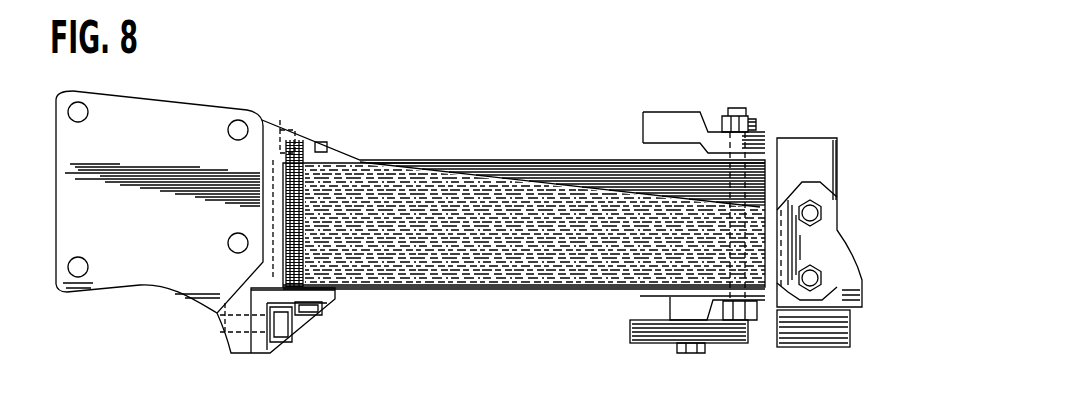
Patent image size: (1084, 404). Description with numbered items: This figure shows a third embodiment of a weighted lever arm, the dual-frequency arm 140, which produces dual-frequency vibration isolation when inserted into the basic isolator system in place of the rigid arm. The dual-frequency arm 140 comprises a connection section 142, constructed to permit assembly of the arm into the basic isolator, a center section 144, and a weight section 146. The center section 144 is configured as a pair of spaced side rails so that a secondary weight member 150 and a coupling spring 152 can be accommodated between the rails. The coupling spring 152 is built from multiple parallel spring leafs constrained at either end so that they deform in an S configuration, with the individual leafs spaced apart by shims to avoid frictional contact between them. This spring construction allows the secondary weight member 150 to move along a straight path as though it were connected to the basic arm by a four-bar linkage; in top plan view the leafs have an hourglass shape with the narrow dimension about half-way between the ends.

The dual-frequency arm 140 is at (491, 118).
The connection section 142 is at (168, 270).
The center section 144 is at (522, 291).
The weight section 146 is at (811, 336).
The secondary weight member 150 is at (667, 120).
The coupling spring 152 is at (547, 162).